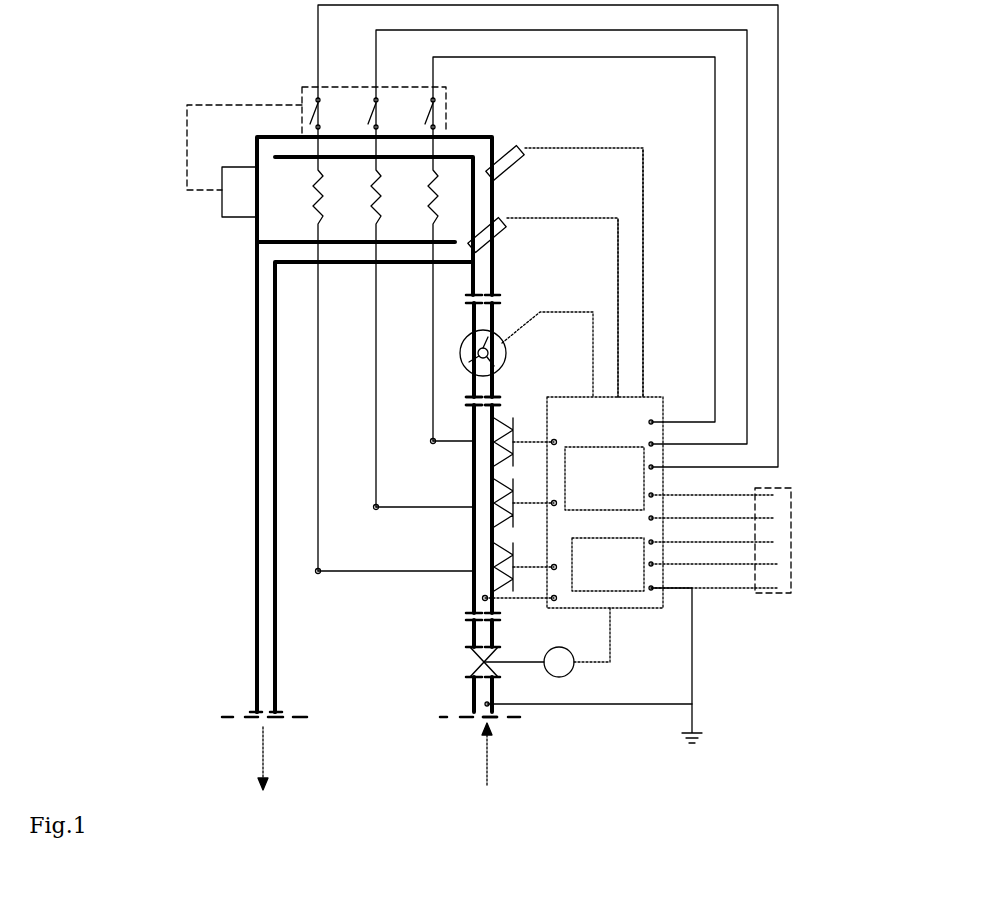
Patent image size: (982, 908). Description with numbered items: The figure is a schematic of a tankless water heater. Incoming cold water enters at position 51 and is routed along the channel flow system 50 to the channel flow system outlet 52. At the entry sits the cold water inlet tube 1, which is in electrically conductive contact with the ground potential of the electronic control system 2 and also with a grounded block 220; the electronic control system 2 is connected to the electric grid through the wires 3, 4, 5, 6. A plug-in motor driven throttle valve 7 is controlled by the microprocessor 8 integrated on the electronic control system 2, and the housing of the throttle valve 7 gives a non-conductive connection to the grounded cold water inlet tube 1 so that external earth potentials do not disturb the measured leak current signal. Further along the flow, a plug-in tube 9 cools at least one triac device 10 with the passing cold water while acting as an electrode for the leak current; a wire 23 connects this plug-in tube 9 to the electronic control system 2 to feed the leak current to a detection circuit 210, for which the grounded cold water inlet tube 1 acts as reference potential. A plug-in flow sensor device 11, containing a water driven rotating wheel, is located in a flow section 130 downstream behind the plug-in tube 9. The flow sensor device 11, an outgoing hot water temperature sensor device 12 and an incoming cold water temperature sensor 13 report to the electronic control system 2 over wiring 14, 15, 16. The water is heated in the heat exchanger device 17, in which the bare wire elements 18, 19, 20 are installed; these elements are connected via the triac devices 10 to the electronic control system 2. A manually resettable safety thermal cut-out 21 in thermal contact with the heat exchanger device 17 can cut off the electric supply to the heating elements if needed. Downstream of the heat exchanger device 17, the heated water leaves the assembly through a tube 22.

The cold water inlet tube 1 is at (495, 717).
The electronic control system 2 is at (637, 610).
The wire 3 is at (775, 495).
The wire 4 is at (775, 518).
The wire 5 is at (775, 542).
The wire 6 is at (777, 564).
The plug-in motor driven throttle valve 7 is at (470, 672).
The microprocessor 8 is at (640, 582).
The plug-in tube 9 is at (470, 410).
The triac device 10 is at (498, 432).
The flow sensor device 11 is at (465, 360).
The outgoing hot water temperature sensor device 12 is at (497, 238).
The incoming cold water temperature sensor 13 is at (520, 163).
The wiring 14 is at (643, 200).
The wiring 15 is at (618, 248).
The wiring 16 is at (592, 312).
The heat exchanger device 17 is at (267, 223).
The bare wire element 18 is at (317, 167).
The bare wire element 19 is at (375, 167).
The bare wire element 20 is at (432, 167).
The manually resettable safety thermal cut-out 21 is at (305, 95).
The tube 22 is at (248, 632).
The wire 23 is at (470, 598).
The channel flow system 50 is at (473, 143).
The position 51 is at (443, 717).
The channel flow system outlet 52 is at (232, 718).
The flow section 130 is at (472, 315).
The detection circuit 210 is at (604, 478).
The grounded block 220 is at (777, 590).